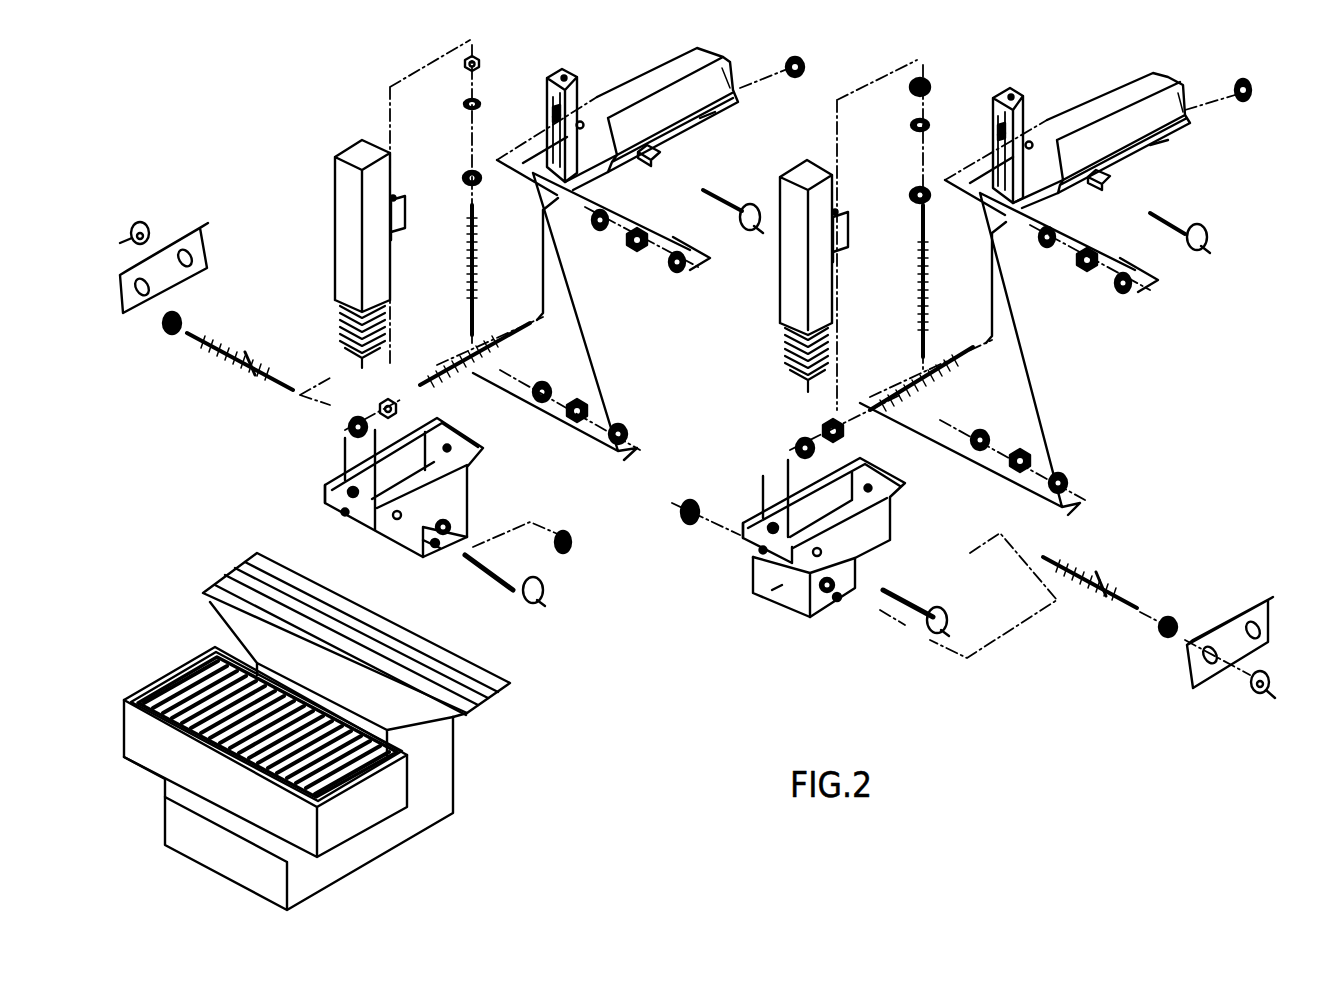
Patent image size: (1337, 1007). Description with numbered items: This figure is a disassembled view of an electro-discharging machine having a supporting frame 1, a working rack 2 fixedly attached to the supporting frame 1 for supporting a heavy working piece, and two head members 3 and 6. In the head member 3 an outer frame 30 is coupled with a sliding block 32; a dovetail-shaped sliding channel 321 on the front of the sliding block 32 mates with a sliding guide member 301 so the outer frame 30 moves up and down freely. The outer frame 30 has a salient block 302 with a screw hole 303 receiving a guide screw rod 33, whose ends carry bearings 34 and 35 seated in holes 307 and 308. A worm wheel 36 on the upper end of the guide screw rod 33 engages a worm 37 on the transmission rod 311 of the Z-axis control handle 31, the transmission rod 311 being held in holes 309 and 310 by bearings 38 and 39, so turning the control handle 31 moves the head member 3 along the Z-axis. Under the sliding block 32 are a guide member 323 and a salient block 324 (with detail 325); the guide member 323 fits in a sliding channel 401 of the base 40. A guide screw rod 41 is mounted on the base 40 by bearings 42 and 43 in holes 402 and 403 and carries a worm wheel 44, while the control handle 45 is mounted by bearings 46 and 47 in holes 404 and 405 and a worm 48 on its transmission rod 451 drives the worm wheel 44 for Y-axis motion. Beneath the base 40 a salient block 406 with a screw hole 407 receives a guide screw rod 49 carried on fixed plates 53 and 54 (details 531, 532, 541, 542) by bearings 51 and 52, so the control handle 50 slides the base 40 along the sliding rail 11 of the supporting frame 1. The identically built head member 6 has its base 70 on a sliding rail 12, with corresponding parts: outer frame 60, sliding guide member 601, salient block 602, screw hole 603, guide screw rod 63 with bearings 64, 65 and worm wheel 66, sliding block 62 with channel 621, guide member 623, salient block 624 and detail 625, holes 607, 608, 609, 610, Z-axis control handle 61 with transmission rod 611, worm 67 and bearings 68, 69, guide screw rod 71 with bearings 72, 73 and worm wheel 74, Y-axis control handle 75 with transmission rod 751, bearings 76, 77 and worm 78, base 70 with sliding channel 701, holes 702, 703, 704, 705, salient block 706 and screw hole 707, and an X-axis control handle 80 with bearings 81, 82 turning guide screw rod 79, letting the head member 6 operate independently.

The supporting frame 1 is at (445, 745).
The sliding rail 11 is at (458, 715).
The sliding rail 12 is at (490, 690).
The working rack 2 is at (195, 680).
The head member 6 is at (356, 147).
The left clamping post 60 is at (345, 245).
The post slot 601 is at (391, 238).
The post key 602 is at (398, 212).
The post pin 603 is at (394, 196).
The adjusting screw 63 is at (470, 298).
The washer 64 is at (466, 186).
The washer 65 is at (464, 106).
The nut 66 is at (462, 68).
The left guide bar 62 is at (662, 75).
The guide bar slot 621 is at (553, 117).
The guide bar end 623 is at (729, 76).
The guide bar ledge 624 is at (700, 122).
The guide bar stop 625 is at (652, 162).
The post top hole 607 is at (566, 77).
The guide bar base plate 608 is at (557, 183).
The guide bar post 609 is at (556, 105).
The guide bar hole 610 is at (583, 125).
The handle shaft 611 is at (715, 188).
The Z-axis control handle 61 is at (738, 219).
The nut 67 is at (633, 252).
The washer 68 is at (676, 272).
The washer 69 is at (597, 228).
The clamping screw 71 is at (508, 335).
The washer 72 is at (348, 427).
The knob 73 is at (806, 68).
The nut 74 is at (378, 405).
The Y-axis control handle 75 is at (545, 586).
The handle shaft 751 is at (496, 578).
The washer 76 is at (622, 428).
The washer 77 is at (548, 385).
The nut 78 is at (582, 408).
The screw 79 is at (265, 365).
The base 70 is at (460, 484).
The slide block end 701 is at (325, 503).
The slide block hole 702 is at (345, 516).
The slide block hole 703 is at (450, 445).
The slide block hole 704 is at (396, 519).
The slide block hole 705 is at (340, 488).
The slide block lower portion 706 is at (420, 548).
The slide block bolt 707 is at (451, 525).
The X-axis control handle 80 is at (145, 226).
The nut 81 is at (180, 318).
The knob 82 is at (566, 530).
The fixed plate 54 is at (210, 250).
The end plate hole 541 is at (135, 288).
The end plate hole 542 is at (188, 250).
The head member 3 is at (800, 158).
The outer frame 30 is at (780, 258).
The sliding guide member 301 is at (835, 258).
The salient block 302 is at (842, 225).
The screw hole 303 is at (836, 210).
The guide screw rod 33 is at (921, 320).
The bearing 34 is at (910, 128).
The bearing 35 is at (914, 202).
The worm wheel 36 is at (910, 90).
The sliding block 32 is at (1142, 75).
The dovetail-shaped sliding channel 321 is at (998, 135).
The guide member 323 is at (1182, 102).
The salient block 324 is at (1152, 147).
The guide bar stop 325 is at (1100, 186).
The hole 307 is at (1012, 95).
The hole 308 is at (1010, 200).
The hole 309 is at (1001, 122).
The hole 310 is at (1032, 145).
The transmission rod 311 is at (1162, 218).
The control handle 31 is at (1206, 234).
The worm 37 is at (1085, 272).
The bearing 38 is at (1122, 295).
The bearing 39 is at (1046, 248).
The guide screw rod 41 is at (958, 372).
The bearing 42 is at (794, 447).
The bearing 43 is at (1250, 95).
The worm wheel 44 is at (823, 426).
The control handle 45 is at (950, 615).
The transmission rod 451 is at (915, 600).
The bearing 46 is at (1064, 478).
The bearing 47 is at (986, 434).
The worm 48 is at (1026, 456).
The guide screw rod 49 is at (1122, 580).
The base 40 is at (888, 525).
The sliding channel 401 is at (743, 540).
The hole 402 is at (758, 555).
The hole 403 is at (871, 485).
The hole 404 is at (822, 552).
The hole 405 is at (768, 522).
The salient block 406 is at (778, 590).
The screw hole 407 is at (824, 593).
The control handle 50 is at (1267, 676).
The bearing 51 is at (1172, 617).
The bearing 52 is at (694, 502).
The fixed plate 53 is at (1252, 606).
The end plate hole 531 is at (1203, 660).
The end plate hole 532 is at (1260, 626).